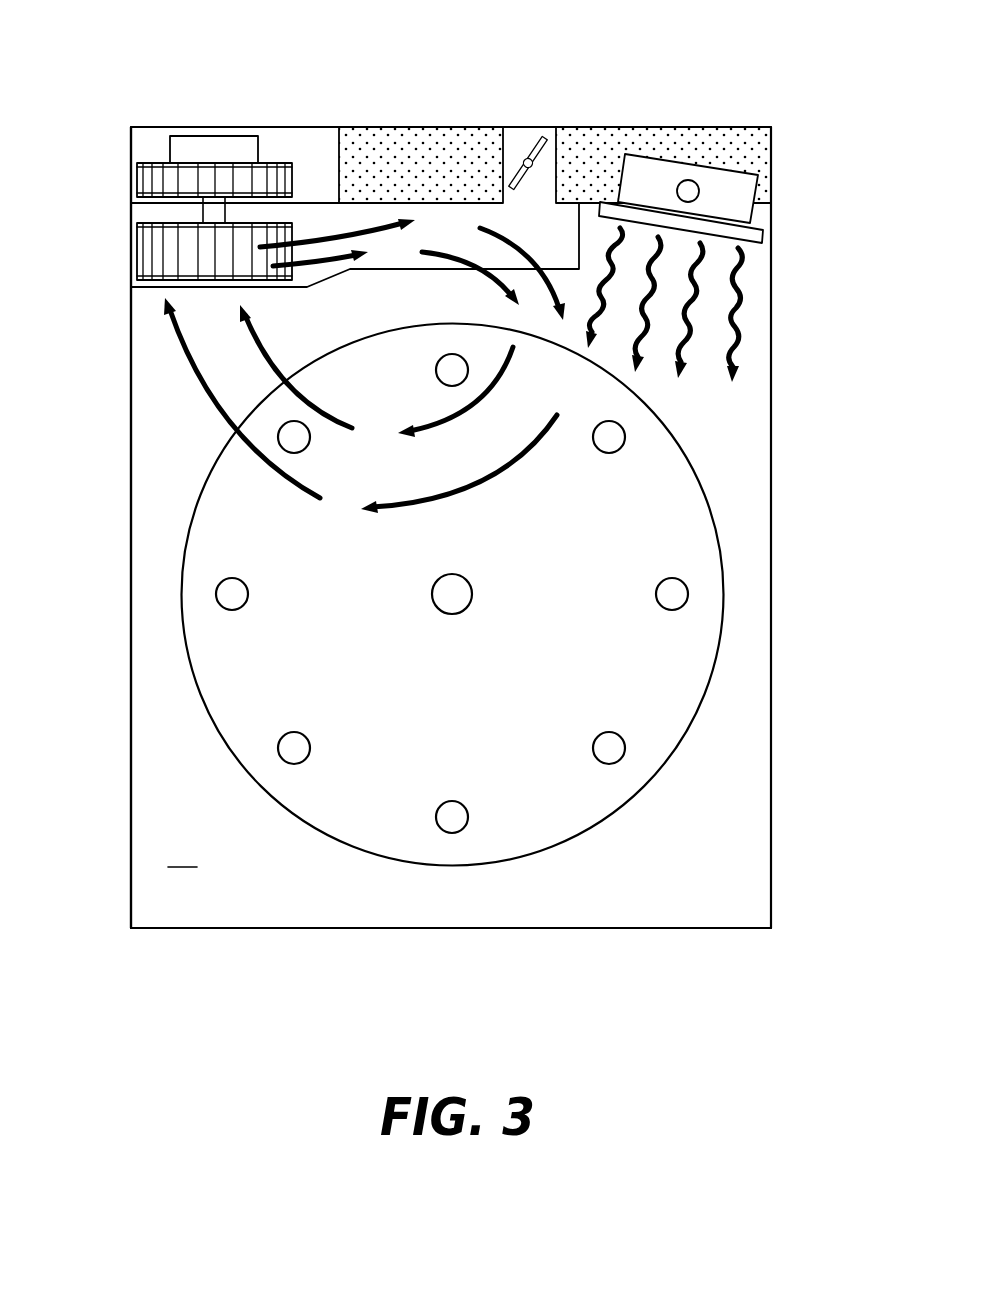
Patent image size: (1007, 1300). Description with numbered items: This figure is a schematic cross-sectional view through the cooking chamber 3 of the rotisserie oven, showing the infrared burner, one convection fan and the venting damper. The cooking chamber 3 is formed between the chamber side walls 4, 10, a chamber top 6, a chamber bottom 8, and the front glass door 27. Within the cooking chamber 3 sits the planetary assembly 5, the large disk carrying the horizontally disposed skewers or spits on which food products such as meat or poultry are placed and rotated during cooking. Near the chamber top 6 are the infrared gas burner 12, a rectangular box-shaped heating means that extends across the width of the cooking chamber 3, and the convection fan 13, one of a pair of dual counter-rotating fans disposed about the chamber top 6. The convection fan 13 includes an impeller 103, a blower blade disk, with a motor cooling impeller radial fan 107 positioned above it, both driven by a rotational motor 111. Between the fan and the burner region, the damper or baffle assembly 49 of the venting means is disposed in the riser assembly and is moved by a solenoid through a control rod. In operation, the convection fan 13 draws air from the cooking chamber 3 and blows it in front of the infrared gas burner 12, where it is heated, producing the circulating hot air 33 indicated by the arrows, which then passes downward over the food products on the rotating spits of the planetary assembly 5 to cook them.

The cooking chamber 3 is at (182, 852).
The chamber side wall 4 is at (541, 122).
The planetary assembly 5 is at (182, 640).
The chamber top 6 is at (316, 203).
The chamber bottom 8 is at (487, 928).
The chamber side wall 10 is at (771, 683).
The infrared gas burner 12 is at (735, 199).
The convection fan 13 is at (222, 116).
The front glass door 27 is at (131, 496).
The circulating hot air 33 is at (180, 375).
The damper or baffle assembly 49 is at (513, 150).
The impeller 103 is at (155, 255).
The motor cooling impeller radial fan 107 is at (153, 182).
The rotational motor 111 is at (192, 150).